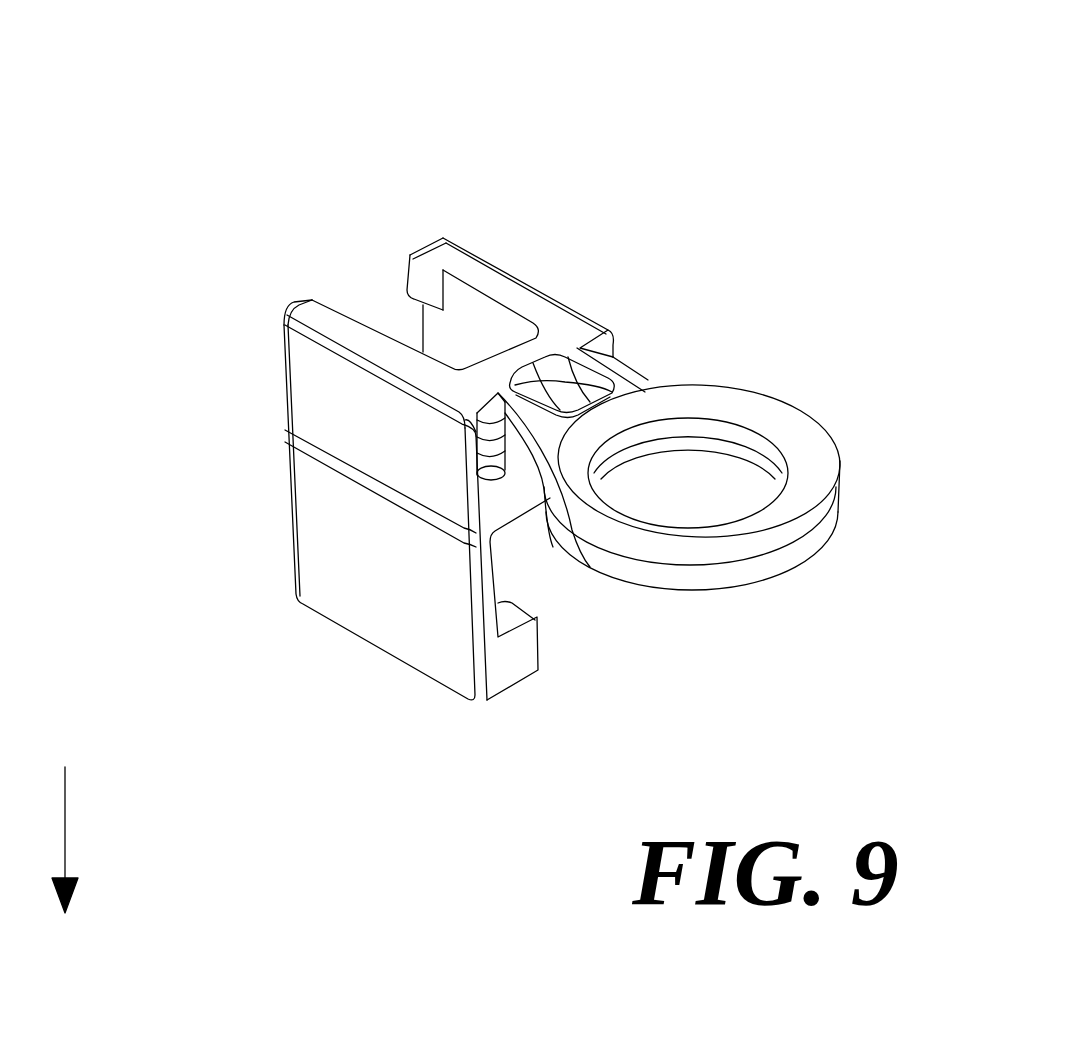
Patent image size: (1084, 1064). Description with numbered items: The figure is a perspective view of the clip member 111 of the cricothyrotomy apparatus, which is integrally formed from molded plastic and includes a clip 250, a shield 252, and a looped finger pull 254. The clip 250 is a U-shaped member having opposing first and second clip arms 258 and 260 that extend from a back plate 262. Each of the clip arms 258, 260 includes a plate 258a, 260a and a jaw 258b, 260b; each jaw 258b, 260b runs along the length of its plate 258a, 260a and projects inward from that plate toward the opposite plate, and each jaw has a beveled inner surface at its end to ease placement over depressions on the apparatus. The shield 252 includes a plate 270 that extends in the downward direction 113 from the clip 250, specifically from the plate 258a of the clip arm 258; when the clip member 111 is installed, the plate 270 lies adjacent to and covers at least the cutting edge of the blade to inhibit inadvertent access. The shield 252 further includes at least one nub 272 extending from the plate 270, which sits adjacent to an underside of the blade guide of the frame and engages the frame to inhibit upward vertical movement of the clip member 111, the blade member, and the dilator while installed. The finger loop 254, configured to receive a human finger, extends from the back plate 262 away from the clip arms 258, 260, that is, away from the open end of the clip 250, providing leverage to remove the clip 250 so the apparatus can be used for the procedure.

The clip member 111 is at (605, 110).
The downward direction 113 is at (65, 823).
The clip 250 is at (223, 293).
The shield 252 is at (363, 602).
The looped finger pull 254 is at (820, 457).
The first clip arm 258 is at (235, 385).
The plate 258a is at (320, 422).
The jaw 258b is at (365, 330).
The second clip arm 260 is at (532, 248).
The plate 260a is at (460, 350).
The jaw 260b is at (547, 310).
The back plate 262 is at (503, 500).
The plate 270 is at (406, 562).
The nub 272 is at (518, 652).